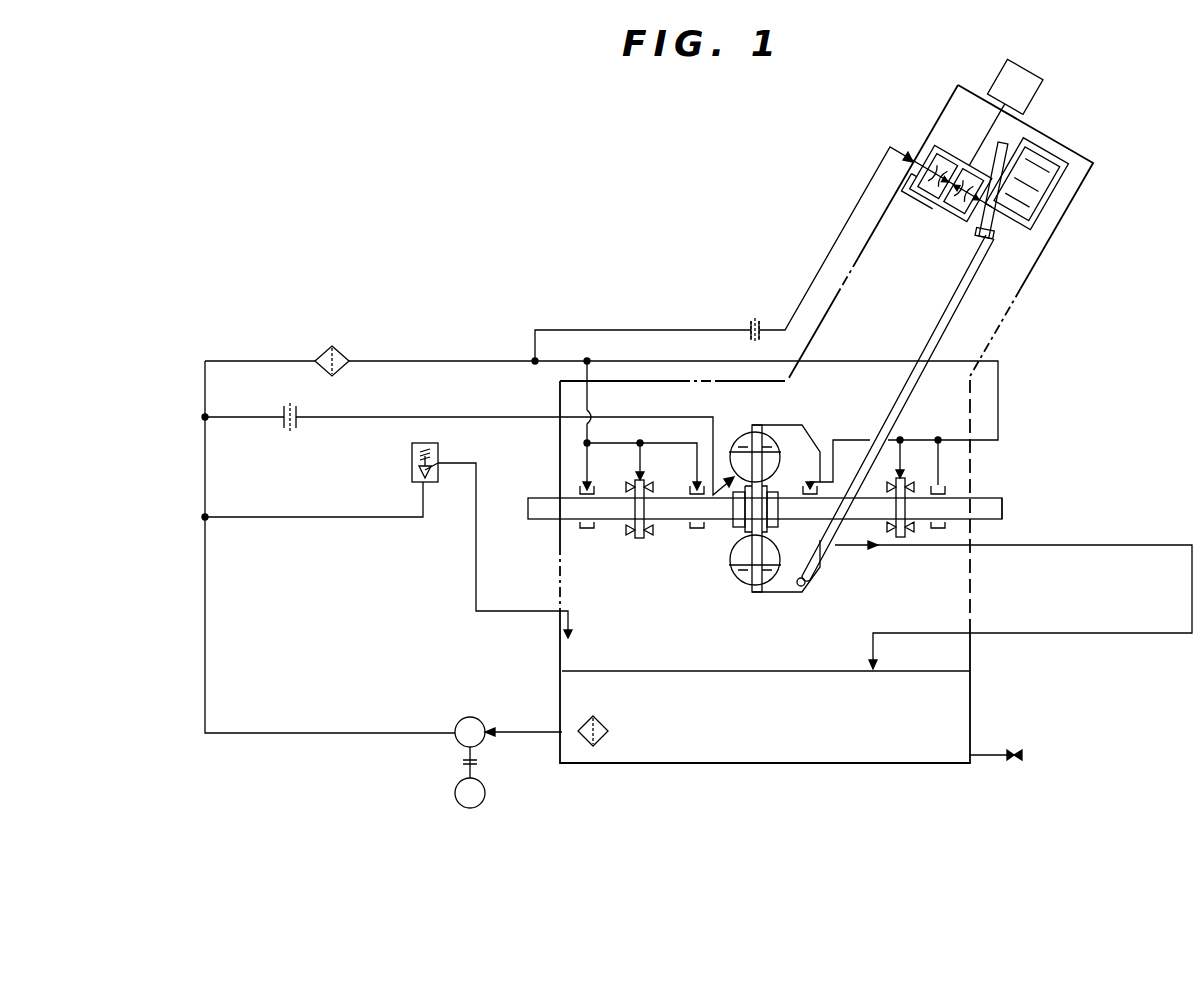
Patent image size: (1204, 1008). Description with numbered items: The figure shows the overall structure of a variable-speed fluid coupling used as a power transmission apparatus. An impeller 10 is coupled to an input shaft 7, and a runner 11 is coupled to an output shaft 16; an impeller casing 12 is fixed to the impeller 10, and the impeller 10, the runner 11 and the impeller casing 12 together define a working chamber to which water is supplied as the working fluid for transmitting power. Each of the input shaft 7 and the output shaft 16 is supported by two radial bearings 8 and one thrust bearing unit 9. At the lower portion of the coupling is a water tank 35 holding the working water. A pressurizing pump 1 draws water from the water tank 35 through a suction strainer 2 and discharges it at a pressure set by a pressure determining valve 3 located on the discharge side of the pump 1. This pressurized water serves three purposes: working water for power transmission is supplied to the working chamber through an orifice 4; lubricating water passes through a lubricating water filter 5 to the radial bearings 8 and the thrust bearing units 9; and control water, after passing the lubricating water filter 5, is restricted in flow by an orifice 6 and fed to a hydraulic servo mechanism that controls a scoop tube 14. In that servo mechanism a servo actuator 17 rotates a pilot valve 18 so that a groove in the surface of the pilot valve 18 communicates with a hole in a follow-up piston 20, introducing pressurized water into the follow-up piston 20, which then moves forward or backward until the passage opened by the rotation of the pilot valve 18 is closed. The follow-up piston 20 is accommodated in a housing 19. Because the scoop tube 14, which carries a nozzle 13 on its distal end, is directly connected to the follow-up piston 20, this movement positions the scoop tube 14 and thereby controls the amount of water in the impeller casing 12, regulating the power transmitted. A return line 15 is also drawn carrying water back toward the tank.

The pump 1 is at (485, 743).
The suction strainer 2 is at (602, 743).
The pressure determining valve 3 is at (410, 462).
The orifice 4 is at (285, 405).
The lubricating water filter 5 is at (340, 345).
The orifice 6 is at (755, 318).
The input shaft 7 is at (545, 520).
The radial bearings 8 is at (587, 528).
The thrust bearing unit 9 is at (640, 538).
The impeller 10 is at (743, 583).
The runner 11 is at (772, 592).
The impeller casing 12 is at (797, 592).
The nozzle 13 is at (807, 587).
The scoop tube 14 is at (840, 552).
The return line 15 is at (970, 543).
The output shaft 16 is at (1002, 495).
The servo actuator 17 is at (997, 117).
The pilot valve 18 is at (946, 184).
The housing 19 is at (1026, 184).
The follow-up piston 20 is at (1030, 205).
The water tank 35 is at (560, 693).